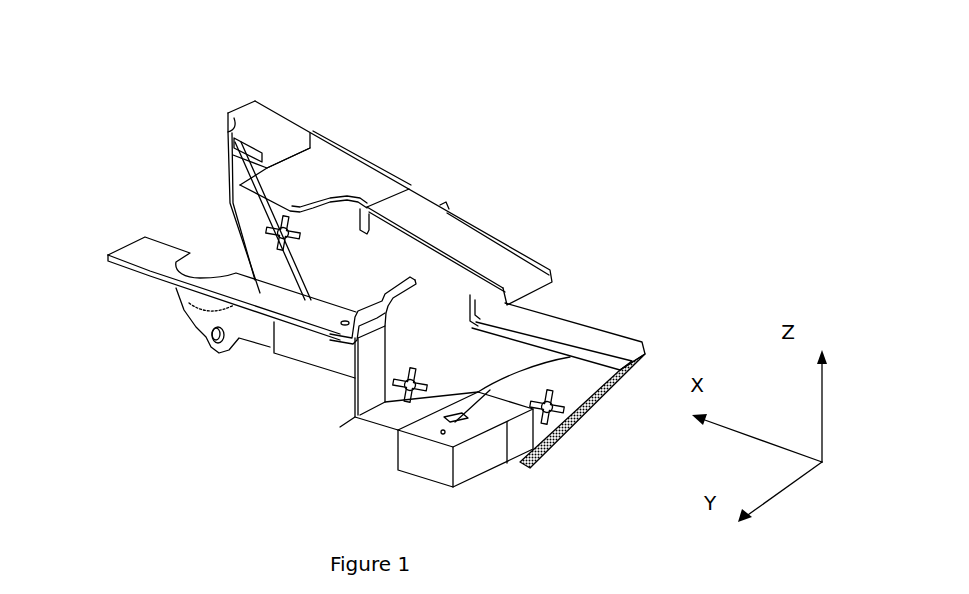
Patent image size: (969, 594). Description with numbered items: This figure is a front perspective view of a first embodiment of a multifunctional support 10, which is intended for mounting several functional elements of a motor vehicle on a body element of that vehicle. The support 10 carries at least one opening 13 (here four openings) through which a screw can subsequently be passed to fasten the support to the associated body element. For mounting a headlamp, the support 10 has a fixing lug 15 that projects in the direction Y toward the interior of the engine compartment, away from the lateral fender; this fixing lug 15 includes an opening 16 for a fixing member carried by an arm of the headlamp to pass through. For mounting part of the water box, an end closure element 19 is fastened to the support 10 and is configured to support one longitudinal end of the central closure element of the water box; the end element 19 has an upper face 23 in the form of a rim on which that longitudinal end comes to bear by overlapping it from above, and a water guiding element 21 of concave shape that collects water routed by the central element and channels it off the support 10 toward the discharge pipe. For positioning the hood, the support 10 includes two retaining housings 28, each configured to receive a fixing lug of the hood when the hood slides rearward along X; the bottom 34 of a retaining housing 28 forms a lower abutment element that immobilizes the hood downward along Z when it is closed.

The multifunctional support 10 is at (503, 146).
The opening 13 is at (208, 338).
The fixing lug 15 is at (475, 455).
The opening 16 is at (570, 357).
The end closure element 19 is at (297, 312).
The water guiding element 21 is at (210, 273).
The upper face 23 is at (257, 290).
The retaining housing 28 is at (281, 185).
The bottom 34 is at (563, 335).